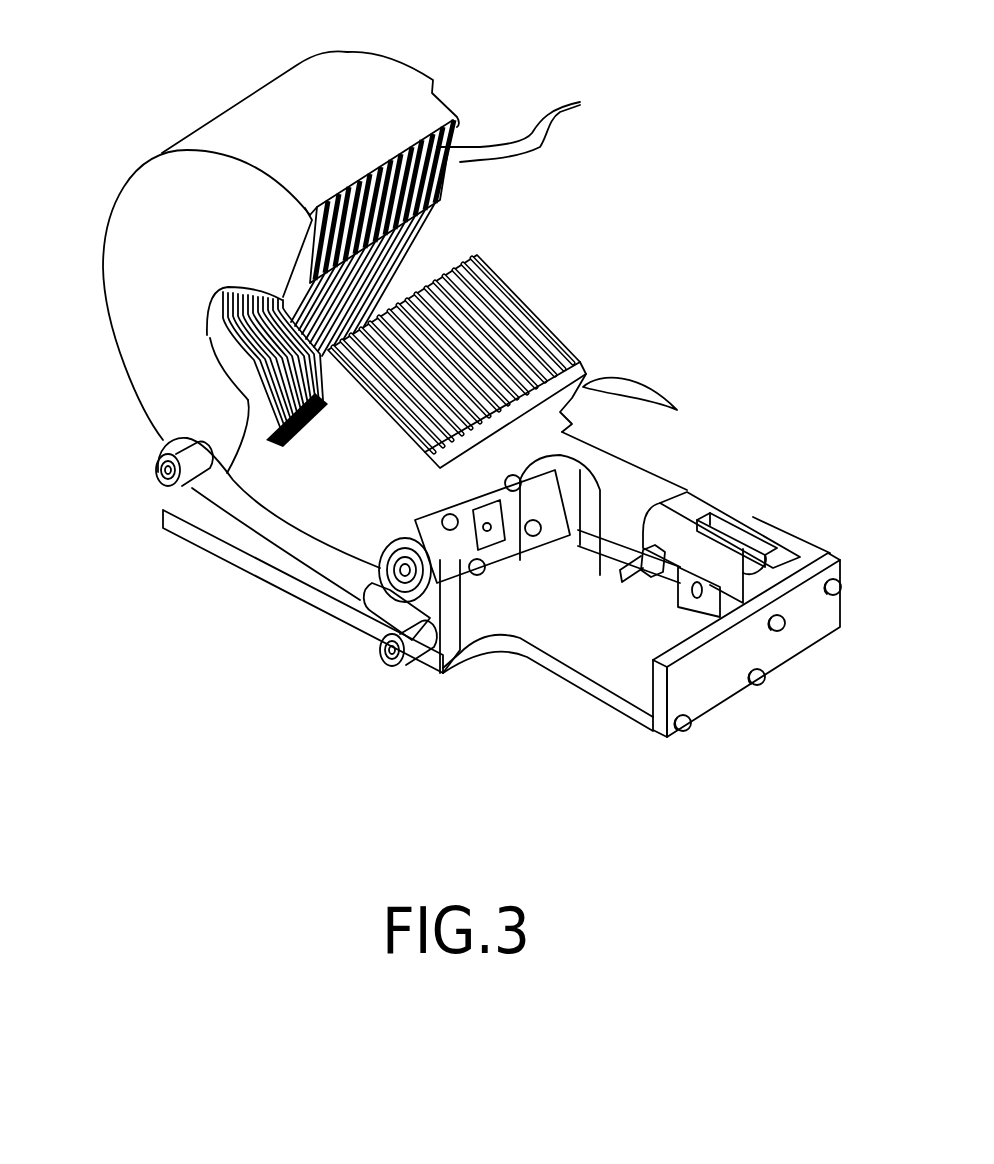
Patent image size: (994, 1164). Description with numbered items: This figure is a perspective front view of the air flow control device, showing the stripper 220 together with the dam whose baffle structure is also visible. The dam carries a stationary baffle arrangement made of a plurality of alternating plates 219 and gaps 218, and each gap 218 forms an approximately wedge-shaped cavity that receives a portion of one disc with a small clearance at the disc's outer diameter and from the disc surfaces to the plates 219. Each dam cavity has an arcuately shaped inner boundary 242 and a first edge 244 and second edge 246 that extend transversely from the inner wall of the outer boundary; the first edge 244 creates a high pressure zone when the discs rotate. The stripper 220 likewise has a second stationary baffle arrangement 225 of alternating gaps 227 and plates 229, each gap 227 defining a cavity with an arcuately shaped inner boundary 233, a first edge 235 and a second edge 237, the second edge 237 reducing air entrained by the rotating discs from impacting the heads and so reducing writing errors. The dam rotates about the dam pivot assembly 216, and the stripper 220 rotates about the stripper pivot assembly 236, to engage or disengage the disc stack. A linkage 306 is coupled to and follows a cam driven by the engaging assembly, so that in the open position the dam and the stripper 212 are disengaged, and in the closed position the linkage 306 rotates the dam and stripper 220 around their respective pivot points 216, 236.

The stripper 212 is at (443, 197).
The dam pivot assembly 216 is at (160, 473).
The gaps 218 is at (257, 357).
The plates 219 is at (536, 125).
The stripper 220 is at (360, 517).
The second stationary baffle arrangement 225 is at (632, 345).
The gaps 227 is at (635, 412).
The plates 229 is at (523, 330).
The inner boundary 233 is at (313, 413).
The first edge 235 is at (330, 598).
The stripper pivot assembly 236 is at (413, 663).
The second edge 237 is at (423, 427).
The inner boundary 242 is at (230, 313).
The first edge 244 is at (435, 186).
The second edge 246 is at (290, 475).
The linkage 306 is at (328, 598).